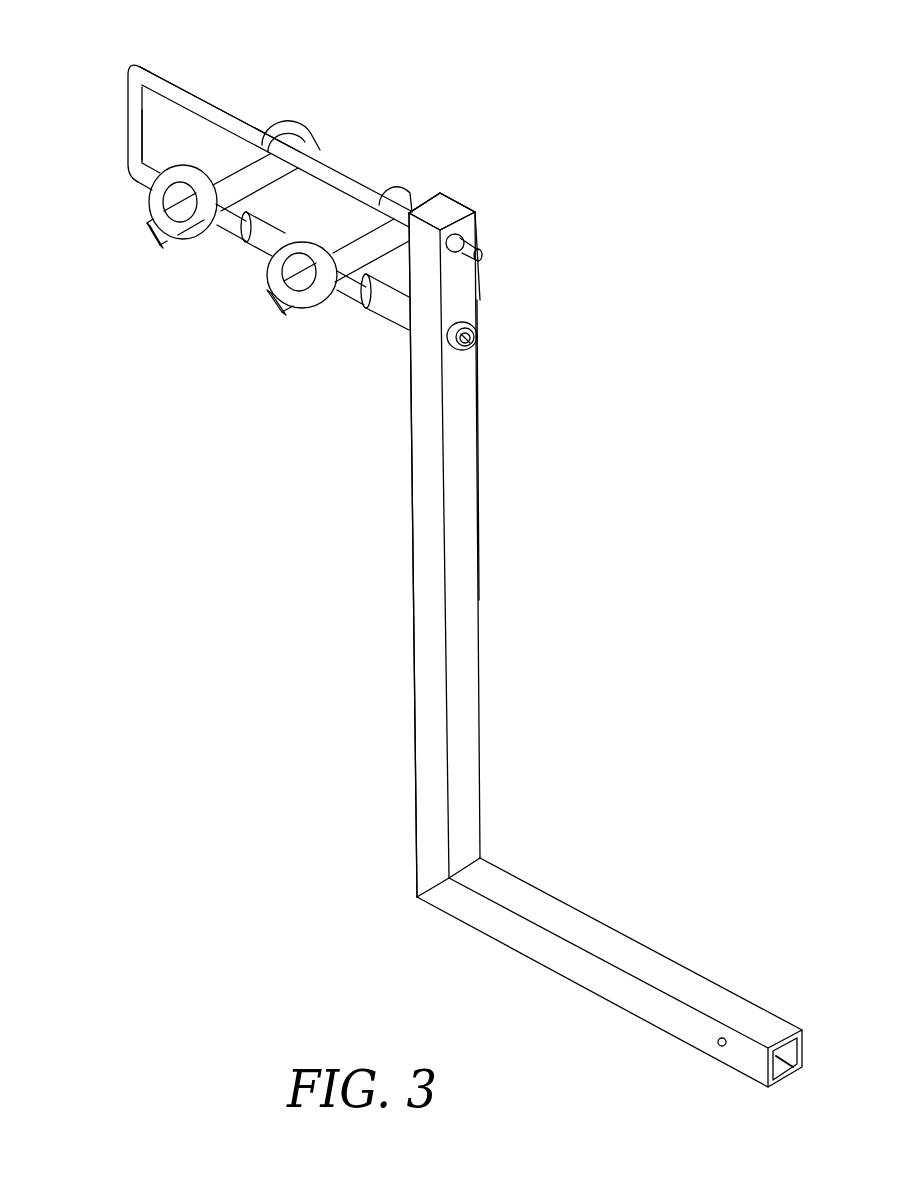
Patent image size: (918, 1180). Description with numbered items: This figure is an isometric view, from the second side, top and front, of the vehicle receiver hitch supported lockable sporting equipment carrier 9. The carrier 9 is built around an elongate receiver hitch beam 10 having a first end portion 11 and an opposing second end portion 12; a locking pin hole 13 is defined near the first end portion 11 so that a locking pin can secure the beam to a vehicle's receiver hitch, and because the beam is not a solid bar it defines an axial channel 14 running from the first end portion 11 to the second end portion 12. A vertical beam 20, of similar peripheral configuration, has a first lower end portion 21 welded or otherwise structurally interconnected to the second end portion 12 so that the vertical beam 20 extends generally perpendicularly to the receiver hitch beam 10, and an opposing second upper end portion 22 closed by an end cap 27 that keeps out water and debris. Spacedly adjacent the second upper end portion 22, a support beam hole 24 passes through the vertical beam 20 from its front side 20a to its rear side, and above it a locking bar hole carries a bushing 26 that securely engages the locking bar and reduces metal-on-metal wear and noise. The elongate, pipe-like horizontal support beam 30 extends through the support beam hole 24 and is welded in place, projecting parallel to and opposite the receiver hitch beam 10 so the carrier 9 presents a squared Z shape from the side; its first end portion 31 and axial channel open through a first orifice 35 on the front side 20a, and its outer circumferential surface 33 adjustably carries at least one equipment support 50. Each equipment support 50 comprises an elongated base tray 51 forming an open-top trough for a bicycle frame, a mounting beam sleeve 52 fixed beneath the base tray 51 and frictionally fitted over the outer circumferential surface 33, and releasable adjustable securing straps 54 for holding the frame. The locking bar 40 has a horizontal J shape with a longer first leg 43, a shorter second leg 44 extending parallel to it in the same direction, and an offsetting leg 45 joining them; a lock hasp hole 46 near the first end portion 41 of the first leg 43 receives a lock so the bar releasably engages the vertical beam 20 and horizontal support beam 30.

The vehicle receiver hitch supported lockable sporting equipment carrier 9 is at (507, 183).
The receiver hitch beam 10 is at (567, 977).
The first end portion 11 is at (767, 1032).
The second end portion 12 is at (483, 877).
The locking pin hole 13 is at (718, 1045).
The axial channel 14 is at (787, 1063).
The vertical beam 20 is at (481, 608).
The front side 20a is at (453, 470).
The first lower end portion 21 is at (432, 845).
The second upper end portion 22 is at (460, 283).
The support beam hole 24 is at (453, 320).
The bushing 26 is at (470, 226).
The end cap 27 is at (435, 210).
The horizontal support beam 30 is at (374, 314).
The first end portion 31 is at (460, 350).
The outer circumferential surface 33 is at (258, 237).
The first orifice 35 is at (470, 343).
The locking bar 40 is at (228, 100).
The first end portion 41 is at (482, 258).
The first leg 43 is at (343, 180).
The second leg 44 is at (148, 162).
The offsetting leg 45 is at (133, 125).
The lock hasp hole 46 is at (463, 236).
The equipment support 50 is at (330, 143).
The base tray 51 is at (153, 228).
The mounting beam sleeve 52 is at (348, 285).
The securing strap 54 is at (150, 200).